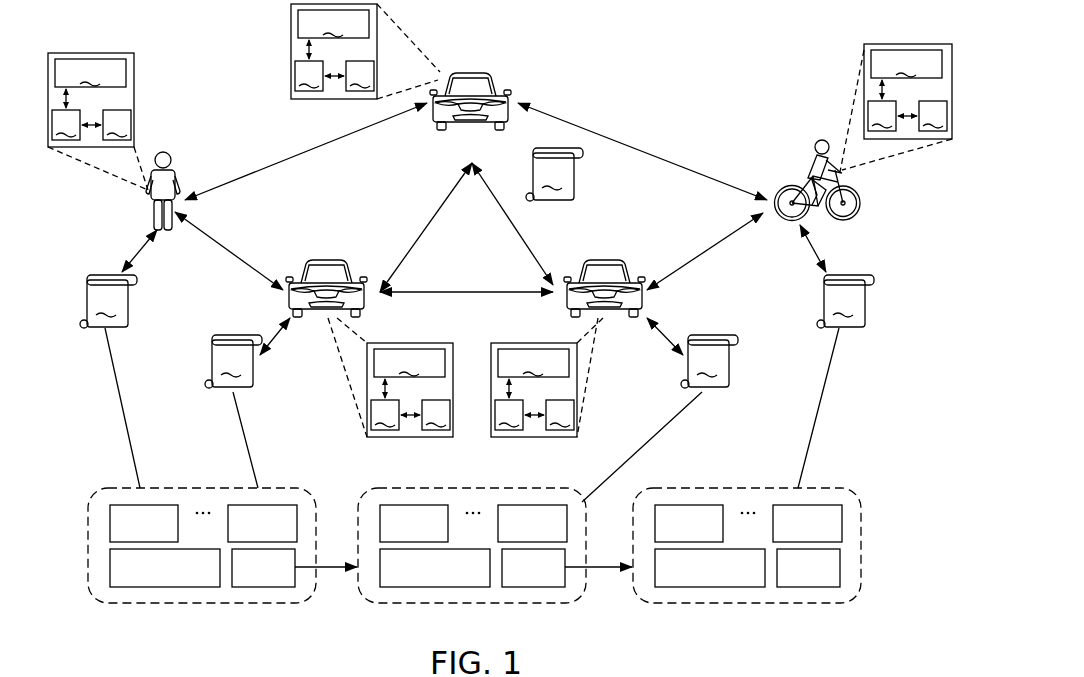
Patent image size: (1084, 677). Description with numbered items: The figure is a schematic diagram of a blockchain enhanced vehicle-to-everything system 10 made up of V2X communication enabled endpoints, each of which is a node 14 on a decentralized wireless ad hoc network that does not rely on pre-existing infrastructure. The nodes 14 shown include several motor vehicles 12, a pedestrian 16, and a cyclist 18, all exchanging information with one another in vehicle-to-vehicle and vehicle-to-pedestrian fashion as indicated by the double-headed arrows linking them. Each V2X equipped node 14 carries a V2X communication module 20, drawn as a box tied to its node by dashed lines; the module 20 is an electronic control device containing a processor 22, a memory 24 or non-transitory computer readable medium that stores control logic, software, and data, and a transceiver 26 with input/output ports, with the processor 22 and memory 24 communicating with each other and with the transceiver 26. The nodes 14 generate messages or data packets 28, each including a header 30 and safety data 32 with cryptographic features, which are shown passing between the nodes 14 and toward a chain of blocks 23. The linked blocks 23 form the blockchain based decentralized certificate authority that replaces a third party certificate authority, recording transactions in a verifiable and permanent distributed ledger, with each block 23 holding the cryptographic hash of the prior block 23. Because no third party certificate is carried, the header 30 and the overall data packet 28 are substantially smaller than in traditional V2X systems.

The blockchain enhanced V2X system 10 is at (661, 93).
The motor vehicle 12 is at (512, 78).
The node 14 is at (503, 181).
The pedestrian 16 is at (180, 172).
The cyclist 18 is at (803, 165).
The V2X communication module 20 is at (93, 52).
The processor 22 is at (474, 245).
The block 23 is at (88, 518).
The memory 24 is at (525, 245).
The transceiver 26 is at (498, 193).
The data packet 28 is at (477, 268).
The header 30 is at (152, 505).
The safety data 32 is at (275, 505).